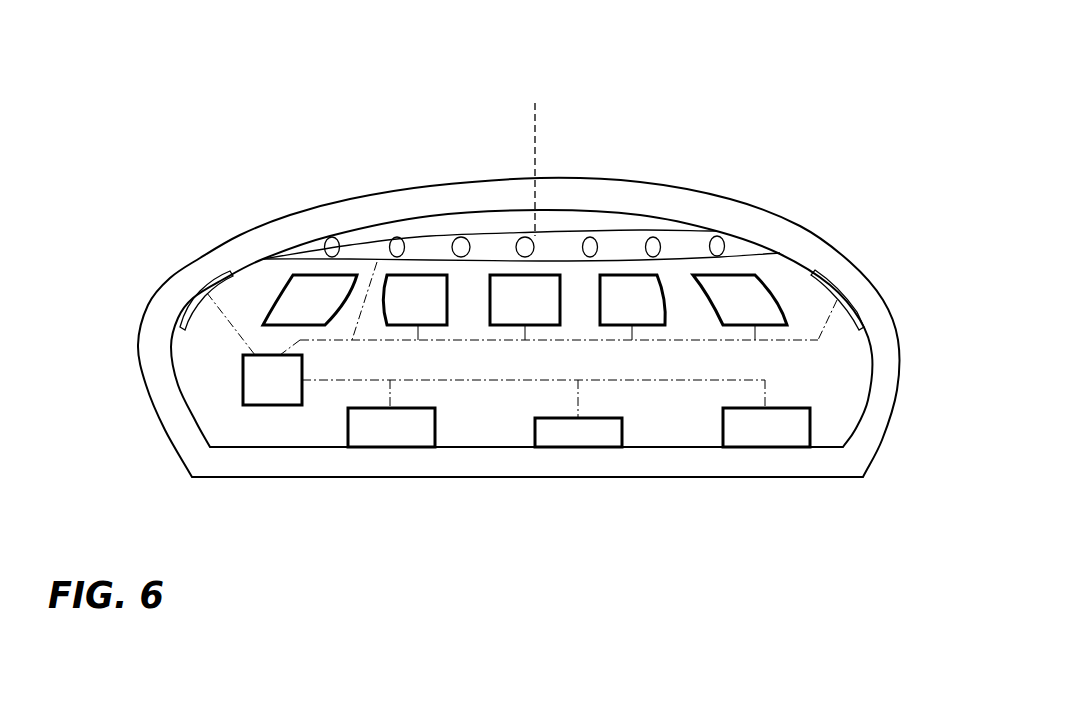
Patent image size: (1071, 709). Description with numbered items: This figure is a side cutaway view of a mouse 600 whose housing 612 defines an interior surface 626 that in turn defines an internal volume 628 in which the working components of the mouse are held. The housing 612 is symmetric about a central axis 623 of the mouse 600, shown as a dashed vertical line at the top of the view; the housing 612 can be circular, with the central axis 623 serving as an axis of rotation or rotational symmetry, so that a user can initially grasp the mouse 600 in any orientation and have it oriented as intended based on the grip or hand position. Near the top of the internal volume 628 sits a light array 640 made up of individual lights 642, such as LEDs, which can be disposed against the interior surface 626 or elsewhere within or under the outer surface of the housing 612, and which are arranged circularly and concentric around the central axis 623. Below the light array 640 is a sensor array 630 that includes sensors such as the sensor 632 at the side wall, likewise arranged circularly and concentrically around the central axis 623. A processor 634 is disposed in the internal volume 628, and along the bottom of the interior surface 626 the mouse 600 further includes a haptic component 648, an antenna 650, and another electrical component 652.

The mouse 600 is at (876, 225).
The housing 612 is at (737, 207).
The central axis 623 is at (537, 118).
The interior surface 626 is at (875, 366).
The internal volume 628 is at (832, 409).
The sensor array 630 is at (313, 298).
The sensor 632 is at (183, 311).
The processor 634 is at (263, 390).
The light array 640 is at (555, 237).
The lights 642 is at (522, 247).
The haptic component 648 is at (398, 437).
The antenna 650 is at (577, 437).
The electrical component 652 is at (772, 437).